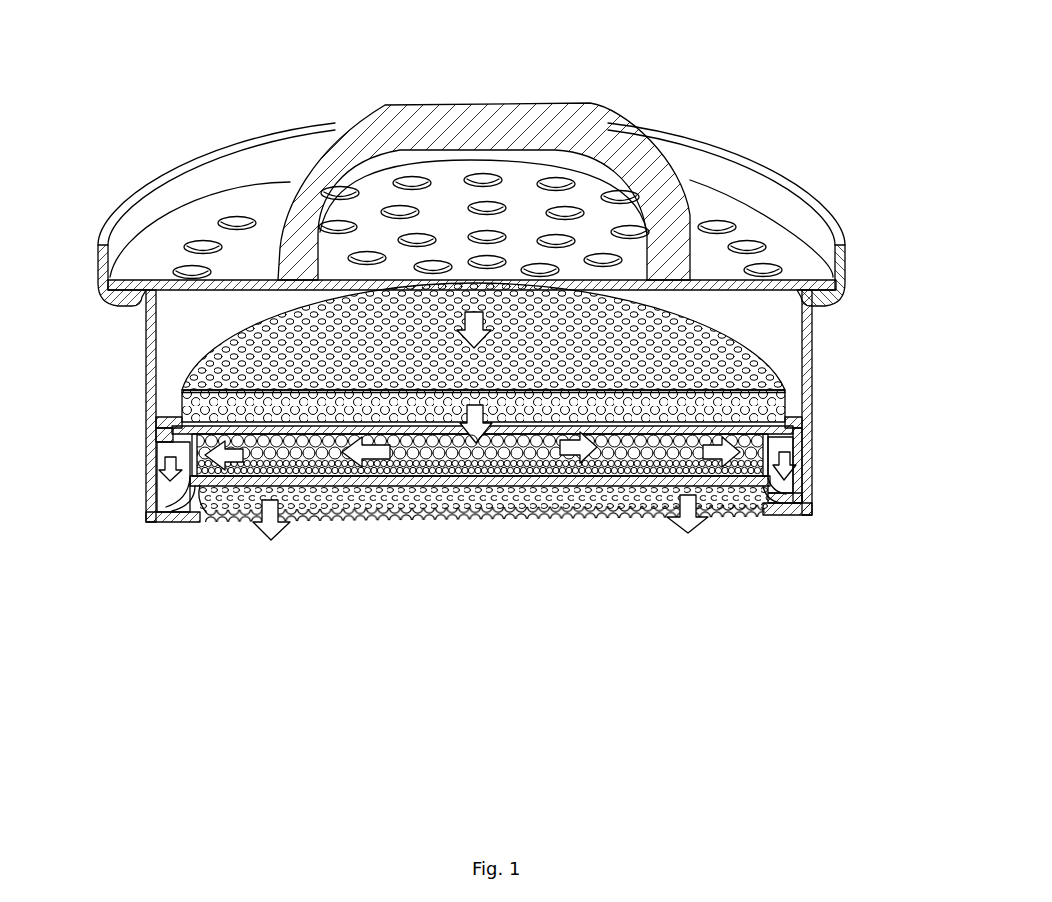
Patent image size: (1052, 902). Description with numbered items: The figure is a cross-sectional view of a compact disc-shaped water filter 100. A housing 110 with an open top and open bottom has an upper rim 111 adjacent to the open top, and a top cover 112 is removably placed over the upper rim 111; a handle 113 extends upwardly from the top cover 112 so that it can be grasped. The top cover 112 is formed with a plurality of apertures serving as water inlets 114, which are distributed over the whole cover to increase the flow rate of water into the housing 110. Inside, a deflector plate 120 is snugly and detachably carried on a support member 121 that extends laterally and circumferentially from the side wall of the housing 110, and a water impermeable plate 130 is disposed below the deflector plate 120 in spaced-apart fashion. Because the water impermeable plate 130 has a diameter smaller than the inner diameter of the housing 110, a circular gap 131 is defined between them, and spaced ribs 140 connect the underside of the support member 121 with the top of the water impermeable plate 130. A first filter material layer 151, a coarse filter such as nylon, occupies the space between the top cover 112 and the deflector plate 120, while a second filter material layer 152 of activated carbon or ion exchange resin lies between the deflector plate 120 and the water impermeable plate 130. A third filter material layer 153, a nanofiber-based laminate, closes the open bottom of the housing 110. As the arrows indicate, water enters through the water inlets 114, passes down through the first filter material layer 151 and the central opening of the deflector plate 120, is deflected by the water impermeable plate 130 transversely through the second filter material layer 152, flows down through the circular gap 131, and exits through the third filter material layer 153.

The water filter 100 is at (818, 130).
The housing 110 is at (146, 358).
The upper rim 111 is at (110, 305).
The top cover 112 is at (187, 227).
The handle 113 is at (415, 118).
The water inlets 114 is at (237, 212).
The deflector plate 120 is at (282, 432).
The support member 121 is at (148, 450).
The water impermeable plate 130 is at (755, 512).
The circular gap 131 is at (173, 453).
The ribs 140 is at (178, 512).
The first filter material layer 151 is at (230, 355).
The second filter material layer 152 is at (745, 445).
The third filter material layer 153 is at (217, 525).